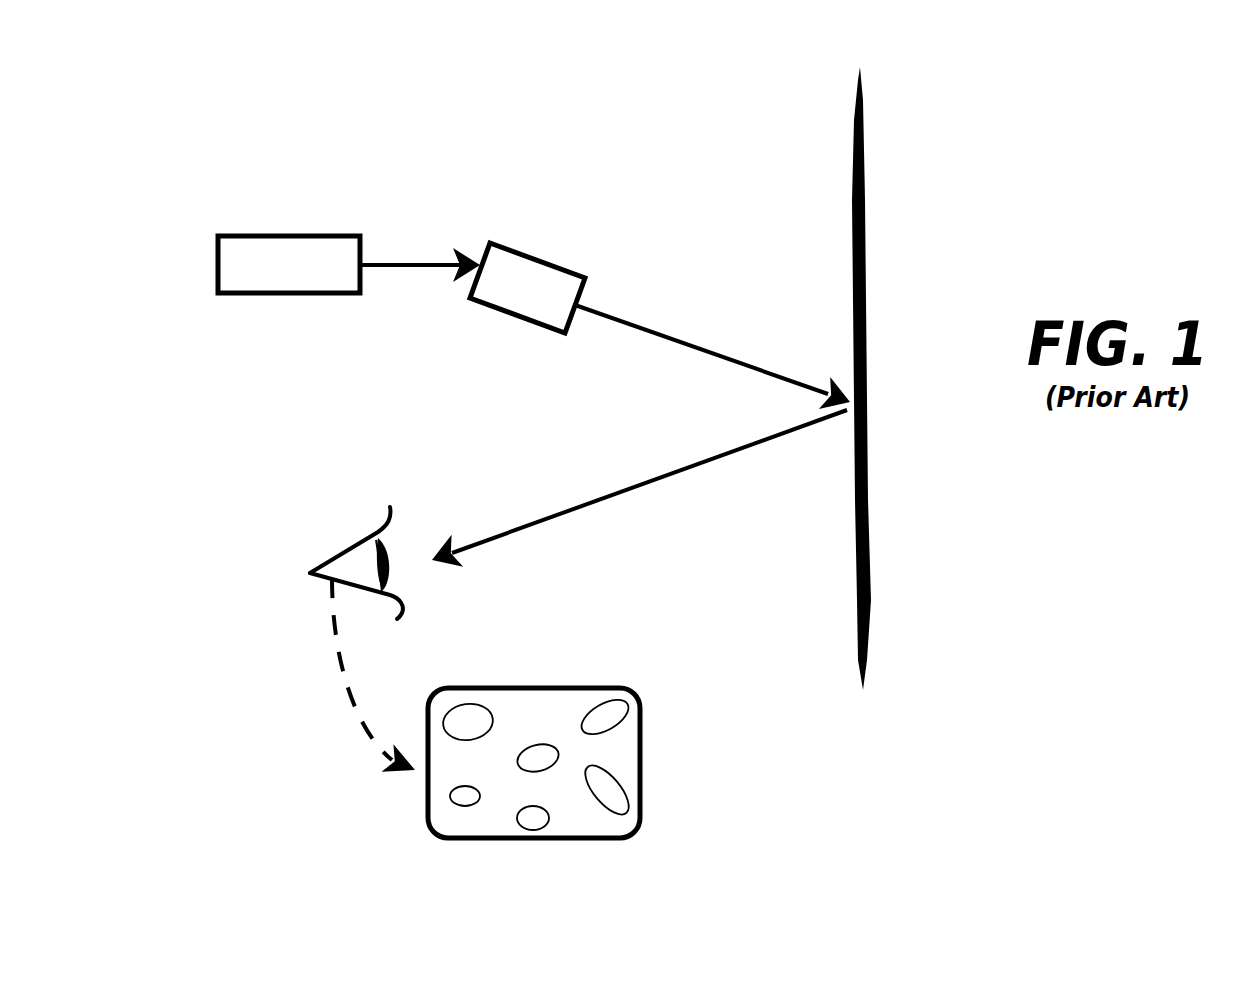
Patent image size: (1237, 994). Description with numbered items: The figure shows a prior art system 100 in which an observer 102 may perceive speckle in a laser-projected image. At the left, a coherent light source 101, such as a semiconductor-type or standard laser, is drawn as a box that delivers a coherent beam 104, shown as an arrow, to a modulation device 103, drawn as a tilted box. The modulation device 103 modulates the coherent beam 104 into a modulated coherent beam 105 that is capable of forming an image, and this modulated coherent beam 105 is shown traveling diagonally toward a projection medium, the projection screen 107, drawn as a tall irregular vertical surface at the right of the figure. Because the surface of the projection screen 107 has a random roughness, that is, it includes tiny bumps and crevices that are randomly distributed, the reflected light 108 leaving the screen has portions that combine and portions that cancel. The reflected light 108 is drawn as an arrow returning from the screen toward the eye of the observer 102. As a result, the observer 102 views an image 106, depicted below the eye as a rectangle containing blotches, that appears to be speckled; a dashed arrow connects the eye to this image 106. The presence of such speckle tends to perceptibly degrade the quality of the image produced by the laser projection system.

The prior art system 100 is at (678, 260).
The coherent light source 101 is at (290, 263).
The observer 102 is at (342, 552).
The modulation device 103 is at (505, 273).
The coherent beam 104 is at (383, 266).
The modulated coherent beam 105 is at (668, 337).
The image 106 is at (640, 748).
The projection screen 107 is at (870, 527).
The reflected light 108 is at (683, 472).